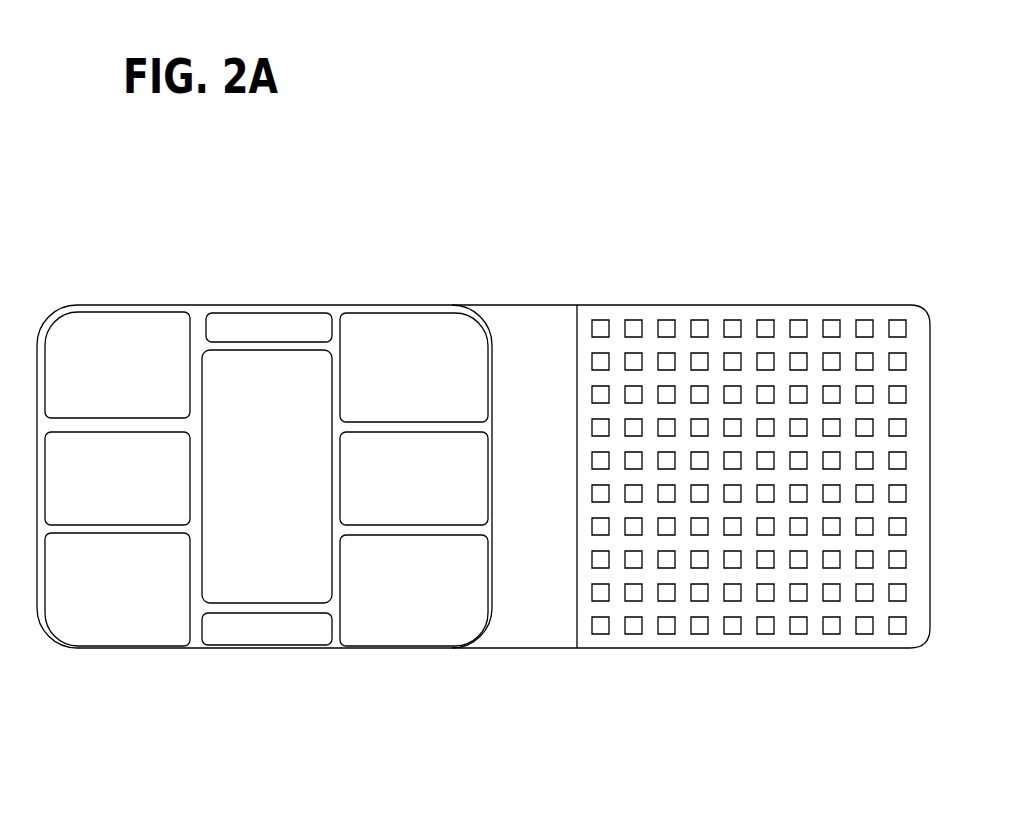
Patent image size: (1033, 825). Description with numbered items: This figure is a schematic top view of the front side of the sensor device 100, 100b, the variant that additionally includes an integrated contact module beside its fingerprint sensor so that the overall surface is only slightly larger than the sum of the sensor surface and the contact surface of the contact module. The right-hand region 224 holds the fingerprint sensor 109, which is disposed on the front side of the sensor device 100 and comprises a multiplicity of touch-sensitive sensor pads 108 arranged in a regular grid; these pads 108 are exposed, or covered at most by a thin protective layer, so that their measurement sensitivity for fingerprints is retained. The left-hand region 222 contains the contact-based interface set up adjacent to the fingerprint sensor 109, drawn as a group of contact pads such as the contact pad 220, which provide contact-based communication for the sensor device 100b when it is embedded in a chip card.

The sensor device 100 is at (705, 200).
The sensor device 100b is at (483, 455).
The touch-sensitive sensor pads 108 is at (737, 320).
The fingerprint sensor 109 is at (749, 424).
The contact pad 220 is at (147, 333).
The contact pad region 222 is at (548, 665).
The pin grid region 224 is at (930, 665).